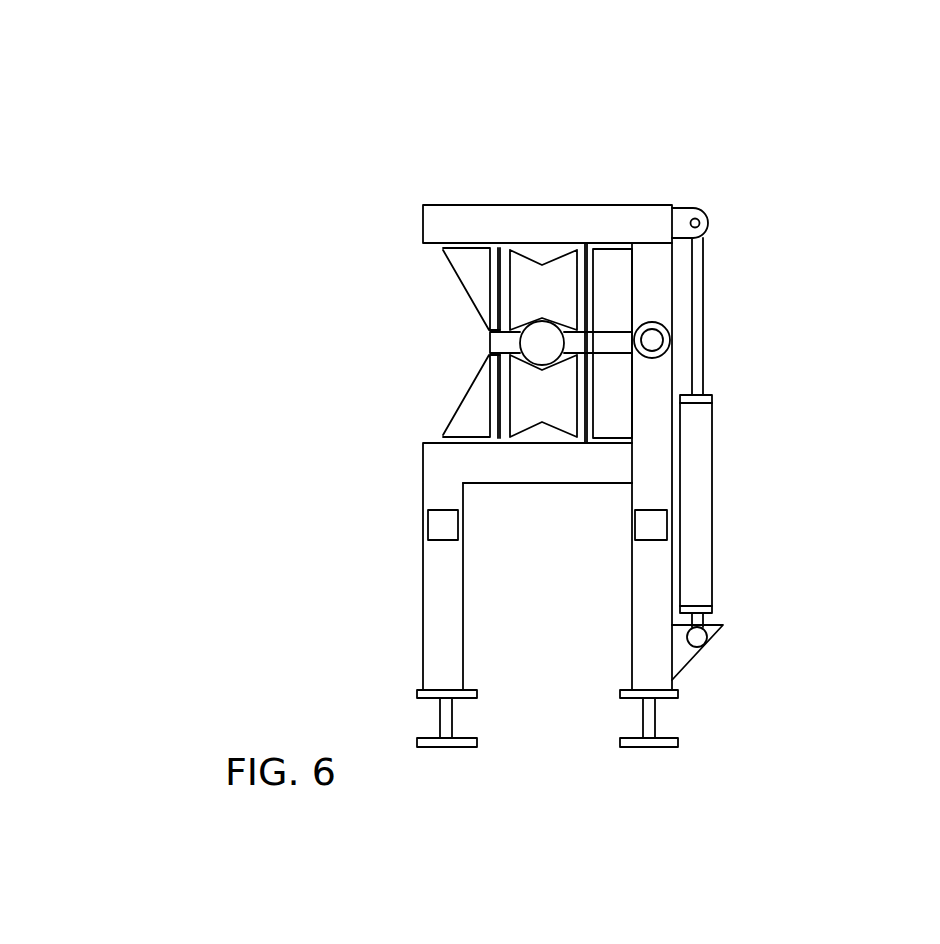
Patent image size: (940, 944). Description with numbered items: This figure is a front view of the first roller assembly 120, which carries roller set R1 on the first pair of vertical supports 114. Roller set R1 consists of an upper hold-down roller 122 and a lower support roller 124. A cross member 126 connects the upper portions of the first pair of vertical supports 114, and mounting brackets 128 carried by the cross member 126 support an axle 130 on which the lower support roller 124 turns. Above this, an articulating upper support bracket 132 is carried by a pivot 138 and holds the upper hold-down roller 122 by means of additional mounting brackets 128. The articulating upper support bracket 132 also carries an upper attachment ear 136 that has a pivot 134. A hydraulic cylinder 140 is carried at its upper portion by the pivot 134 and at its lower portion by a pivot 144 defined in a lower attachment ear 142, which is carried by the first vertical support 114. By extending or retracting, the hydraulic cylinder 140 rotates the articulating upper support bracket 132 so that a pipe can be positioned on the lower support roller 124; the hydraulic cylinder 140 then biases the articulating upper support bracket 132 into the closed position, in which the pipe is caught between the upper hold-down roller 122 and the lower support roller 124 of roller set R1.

The first roller assembly 120 is at (300, 208).
The vertical support 114 is at (405, 585).
The upper hold-down roller 122 is at (522, 290).
The lower support roller 124 is at (552, 392).
The cross member 126 is at (550, 492).
The mounting brackets 128 is at (610, 270).
The axle 130 is at (498, 395).
The articulating upper support bracket 132 is at (607, 222).
The pivot 134 is at (652, 338).
The upper attachment ear 136 is at (705, 207).
The pivot 138 is at (697, 222).
The hydraulic cylinder 140 is at (720, 483).
The lower attachment ear 142 is at (693, 667).
The pivot 144 is at (697, 638).
The roller set R1 is at (363, 355).